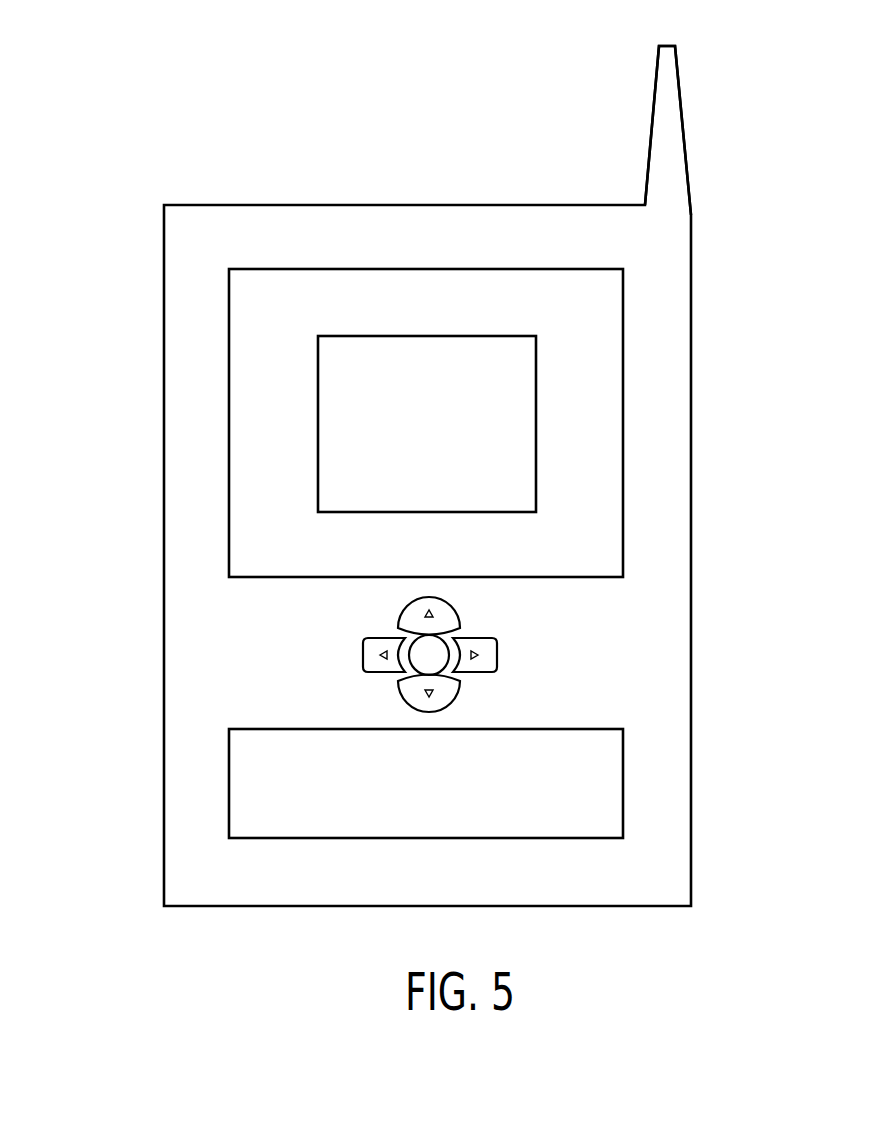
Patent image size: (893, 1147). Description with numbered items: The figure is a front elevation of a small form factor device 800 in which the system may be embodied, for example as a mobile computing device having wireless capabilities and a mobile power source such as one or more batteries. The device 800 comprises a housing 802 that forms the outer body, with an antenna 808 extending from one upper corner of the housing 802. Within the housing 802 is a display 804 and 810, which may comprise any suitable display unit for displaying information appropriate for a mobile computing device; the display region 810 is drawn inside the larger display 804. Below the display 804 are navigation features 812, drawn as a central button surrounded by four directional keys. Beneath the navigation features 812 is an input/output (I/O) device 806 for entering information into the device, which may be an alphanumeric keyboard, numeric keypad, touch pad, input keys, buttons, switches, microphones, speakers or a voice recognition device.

The device 800 is at (409, 476).
The housing 802 is at (164, 645).
The display 804 is at (623, 325).
The input/output (I/O) device 806 is at (623, 782).
The antenna 808 is at (653, 125).
The display 810 is at (427, 335).
The navigation features 812 is at (524, 655).